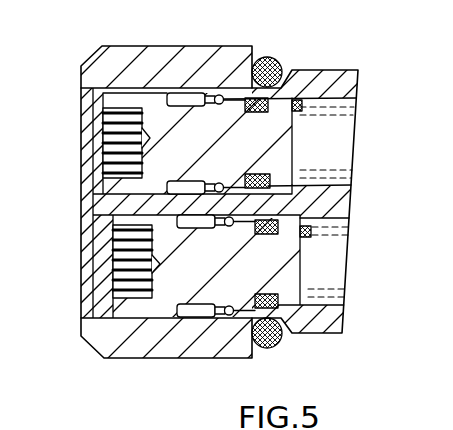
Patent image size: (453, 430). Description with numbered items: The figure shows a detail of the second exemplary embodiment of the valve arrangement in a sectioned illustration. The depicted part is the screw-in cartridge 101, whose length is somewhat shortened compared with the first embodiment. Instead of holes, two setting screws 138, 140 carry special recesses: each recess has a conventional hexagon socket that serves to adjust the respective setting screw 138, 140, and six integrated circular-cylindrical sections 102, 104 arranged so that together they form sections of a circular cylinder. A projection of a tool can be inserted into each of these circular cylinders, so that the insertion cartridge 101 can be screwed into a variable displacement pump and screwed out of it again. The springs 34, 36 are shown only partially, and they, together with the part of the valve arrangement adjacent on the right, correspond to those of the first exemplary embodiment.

The screw-in cartridge 101 is at (190, 362).
The circular-cylindrical section 102 is at (110, 172).
The circular-cylindrical section 104 is at (112, 288).
The setting screw 138 is at (228, 158).
The setting screw 140 is at (228, 280).
The spring 34 is at (320, 110).
The spring 36 is at (316, 297).